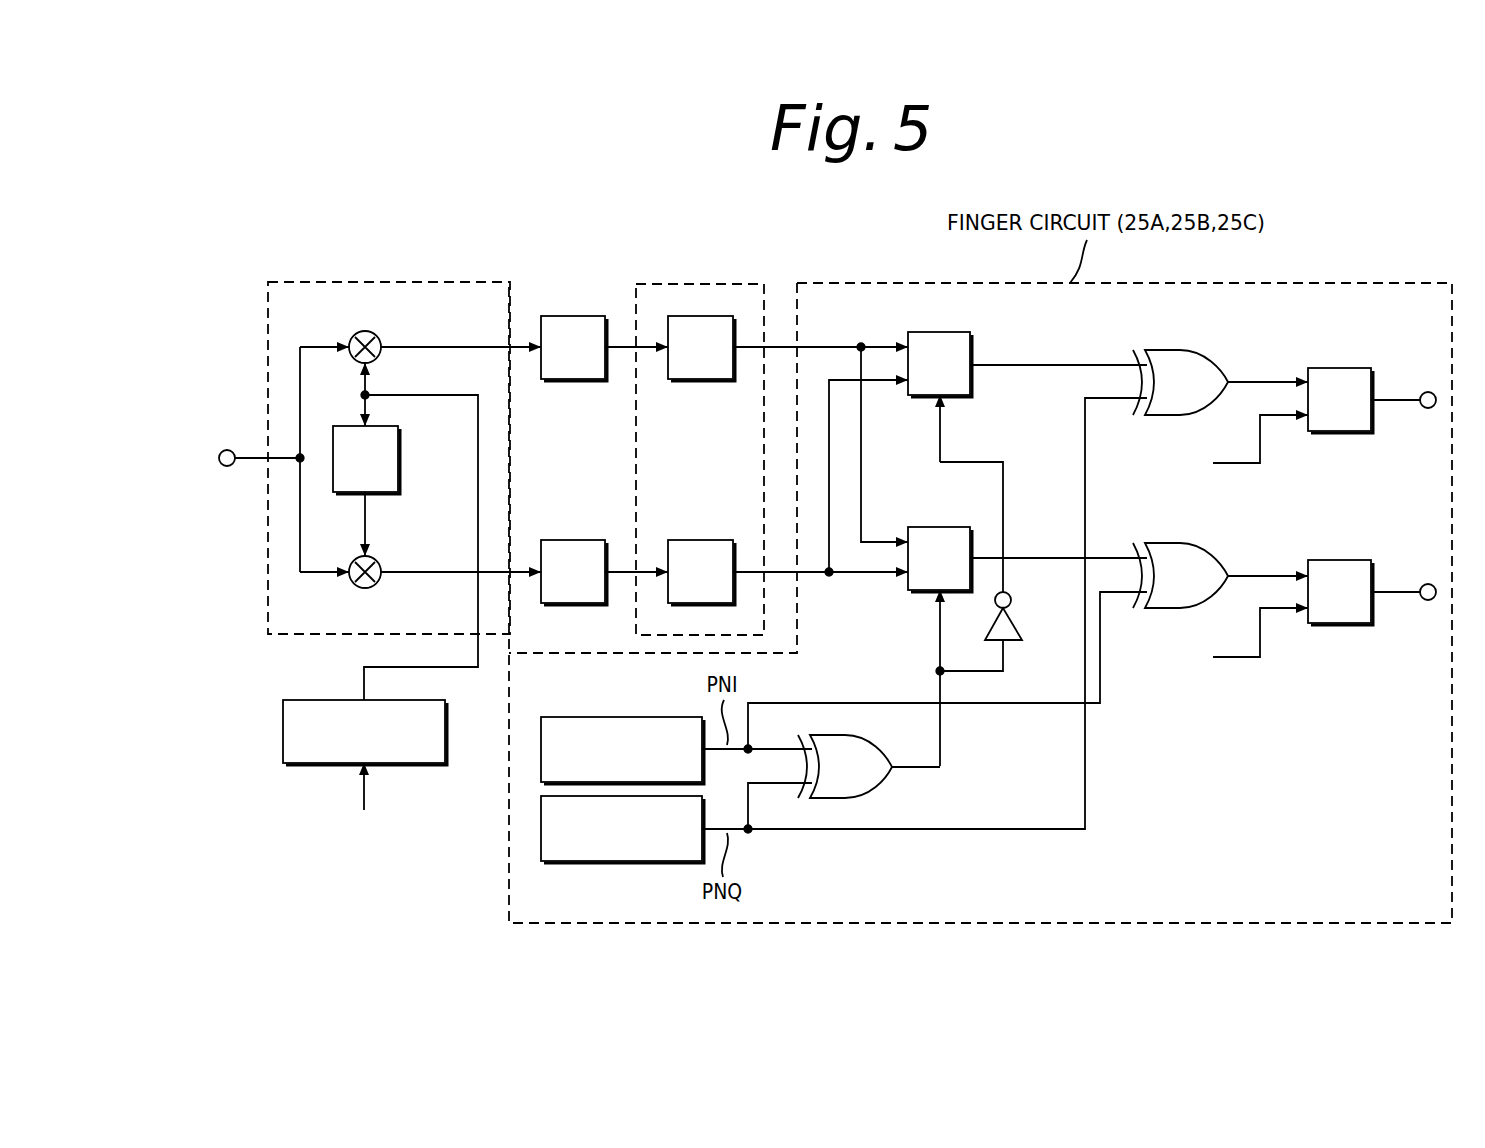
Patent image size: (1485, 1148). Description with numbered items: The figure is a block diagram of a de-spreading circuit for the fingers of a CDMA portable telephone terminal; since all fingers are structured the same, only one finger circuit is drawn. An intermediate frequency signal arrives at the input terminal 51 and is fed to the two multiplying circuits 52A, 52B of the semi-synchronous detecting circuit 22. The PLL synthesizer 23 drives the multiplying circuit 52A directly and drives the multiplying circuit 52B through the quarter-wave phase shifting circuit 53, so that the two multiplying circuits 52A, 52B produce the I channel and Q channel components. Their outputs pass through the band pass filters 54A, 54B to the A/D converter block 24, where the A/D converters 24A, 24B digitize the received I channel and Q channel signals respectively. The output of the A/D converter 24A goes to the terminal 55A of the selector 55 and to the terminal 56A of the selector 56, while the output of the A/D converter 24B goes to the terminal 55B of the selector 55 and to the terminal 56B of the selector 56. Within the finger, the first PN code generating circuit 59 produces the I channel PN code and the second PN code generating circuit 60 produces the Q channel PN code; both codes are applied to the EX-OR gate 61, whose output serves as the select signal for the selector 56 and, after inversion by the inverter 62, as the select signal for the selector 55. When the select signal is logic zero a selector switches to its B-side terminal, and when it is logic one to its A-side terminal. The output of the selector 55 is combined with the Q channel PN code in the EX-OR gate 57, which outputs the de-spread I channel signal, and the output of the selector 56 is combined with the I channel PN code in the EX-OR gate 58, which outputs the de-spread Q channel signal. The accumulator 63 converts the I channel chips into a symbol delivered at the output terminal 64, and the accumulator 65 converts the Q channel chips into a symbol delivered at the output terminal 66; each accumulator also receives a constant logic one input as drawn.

The semi-synchronous detecting circuit 22 is at (268, 572).
The PLL synthesizer 23 is at (283, 730).
The A/D converter block 24 is at (702, 284).
The A/D converter 24A is at (700, 379).
The A/D converter 24B is at (702, 540).
The input terminal 51 is at (219, 458).
The multiplying circuit 52A is at (378, 336).
The multiplying circuit 52B is at (378, 585).
The π/2 phase shifting circuit 53 is at (400, 462).
The band pass filter 54A is at (570, 379).
The band pass filter 54B is at (575, 540).
The selector 55 is at (970, 332).
The terminal 55A is at (904, 344).
The terminal 55B is at (905, 386).
The selector 56 is at (930, 596).
The terminal 56A is at (905, 530).
The terminal 56B is at (904, 578).
The EX-OR gate 57 is at (1180, 350).
The EX-OR gate 58 is at (1180, 543).
The PN code generating circuit 59 is at (620, 717).
The PN code generating circuit 60 is at (620, 861).
The EX-OR gate 61 is at (865, 795).
The inverter 62 is at (1020, 630).
The accumulator 63 is at (1340, 368).
The output terminal 64 is at (1428, 392).
The accumulator 65 is at (1340, 560).
The output terminal 66 is at (1428, 584).